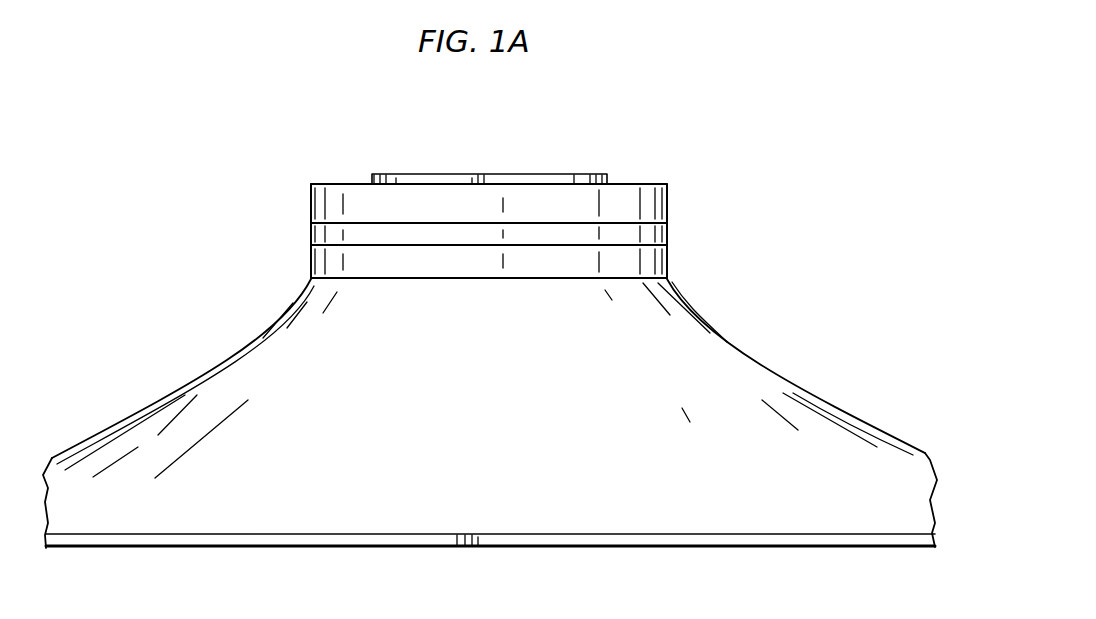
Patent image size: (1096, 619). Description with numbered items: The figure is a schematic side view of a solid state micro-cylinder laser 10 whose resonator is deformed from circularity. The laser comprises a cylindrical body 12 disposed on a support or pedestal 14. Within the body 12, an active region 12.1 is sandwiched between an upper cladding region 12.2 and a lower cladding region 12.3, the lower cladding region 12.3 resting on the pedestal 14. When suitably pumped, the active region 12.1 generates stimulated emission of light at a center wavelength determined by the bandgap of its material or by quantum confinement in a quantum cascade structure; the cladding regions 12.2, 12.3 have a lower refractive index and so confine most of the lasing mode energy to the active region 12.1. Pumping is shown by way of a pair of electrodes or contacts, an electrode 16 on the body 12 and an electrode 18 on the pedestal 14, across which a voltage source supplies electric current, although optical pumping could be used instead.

The micro-cylinder laser 10 is at (416, 113).
The cylindrical body 12 is at (511, 231).
The active region 12.1 is at (667, 232).
The upper cladding region 12.2 is at (667, 202).
The lower cladding region 12.3 is at (667, 258).
The pedestal 14 is at (125, 418).
The electrode 16 is at (547, 173).
The electrode 18 is at (690, 547).